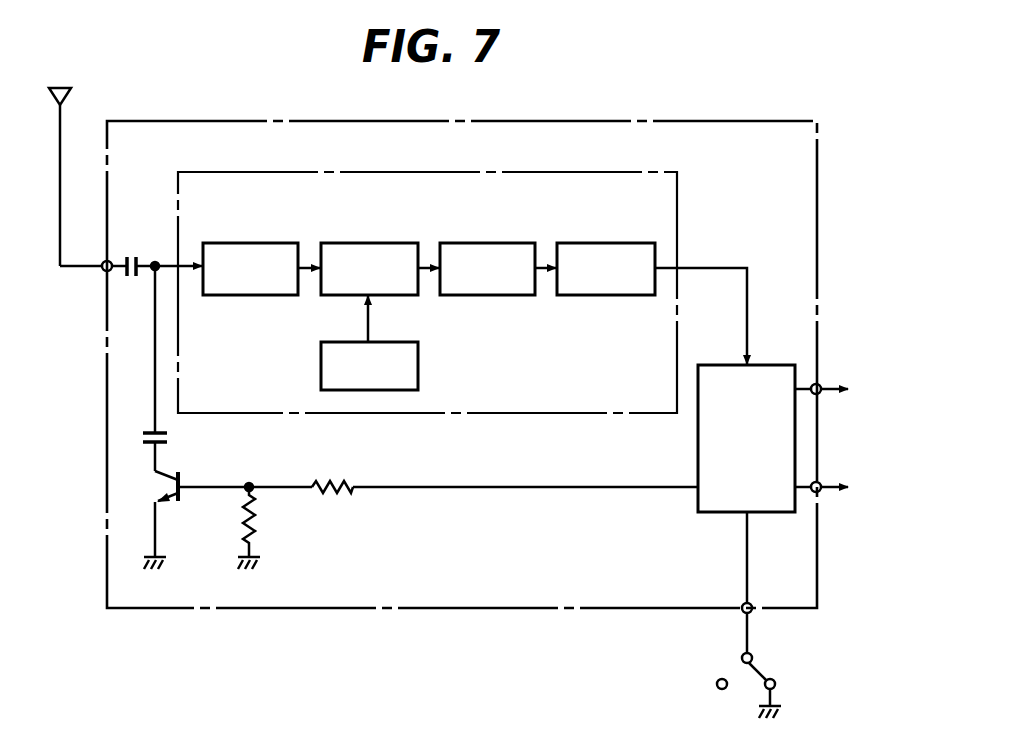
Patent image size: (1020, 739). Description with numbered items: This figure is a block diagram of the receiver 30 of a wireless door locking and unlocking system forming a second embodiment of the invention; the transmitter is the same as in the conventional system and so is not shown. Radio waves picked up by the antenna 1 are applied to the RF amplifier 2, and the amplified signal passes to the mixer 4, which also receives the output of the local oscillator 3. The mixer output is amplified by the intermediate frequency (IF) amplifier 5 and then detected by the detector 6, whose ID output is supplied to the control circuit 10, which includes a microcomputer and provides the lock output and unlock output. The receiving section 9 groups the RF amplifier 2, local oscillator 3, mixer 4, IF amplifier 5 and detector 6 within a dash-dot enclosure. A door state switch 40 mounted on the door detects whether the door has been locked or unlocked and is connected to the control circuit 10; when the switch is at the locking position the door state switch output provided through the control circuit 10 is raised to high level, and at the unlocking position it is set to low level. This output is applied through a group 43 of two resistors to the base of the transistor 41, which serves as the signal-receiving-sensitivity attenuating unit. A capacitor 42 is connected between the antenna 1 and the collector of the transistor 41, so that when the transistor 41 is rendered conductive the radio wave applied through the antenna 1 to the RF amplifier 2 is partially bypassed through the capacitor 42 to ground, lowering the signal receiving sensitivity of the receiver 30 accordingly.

The antenna 1 is at (72, 98).
The RF amplifier 2 is at (283, 243).
The local oscillator 3 is at (418, 352).
The mixer 4 is at (402, 243).
The intermediate frequency (IF) amplifier 5 is at (520, 243).
The detector 6 is at (638, 243).
The receiver 9 is at (678, 178).
The control circuit 10 is at (776, 365).
The receiver 30 is at (697, 114).
The door state switch 40 is at (736, 668).
The transistor 41 is at (176, 496).
The capacitor 42 is at (144, 438).
The group of resistors R1 and R2 43 is at (332, 494).